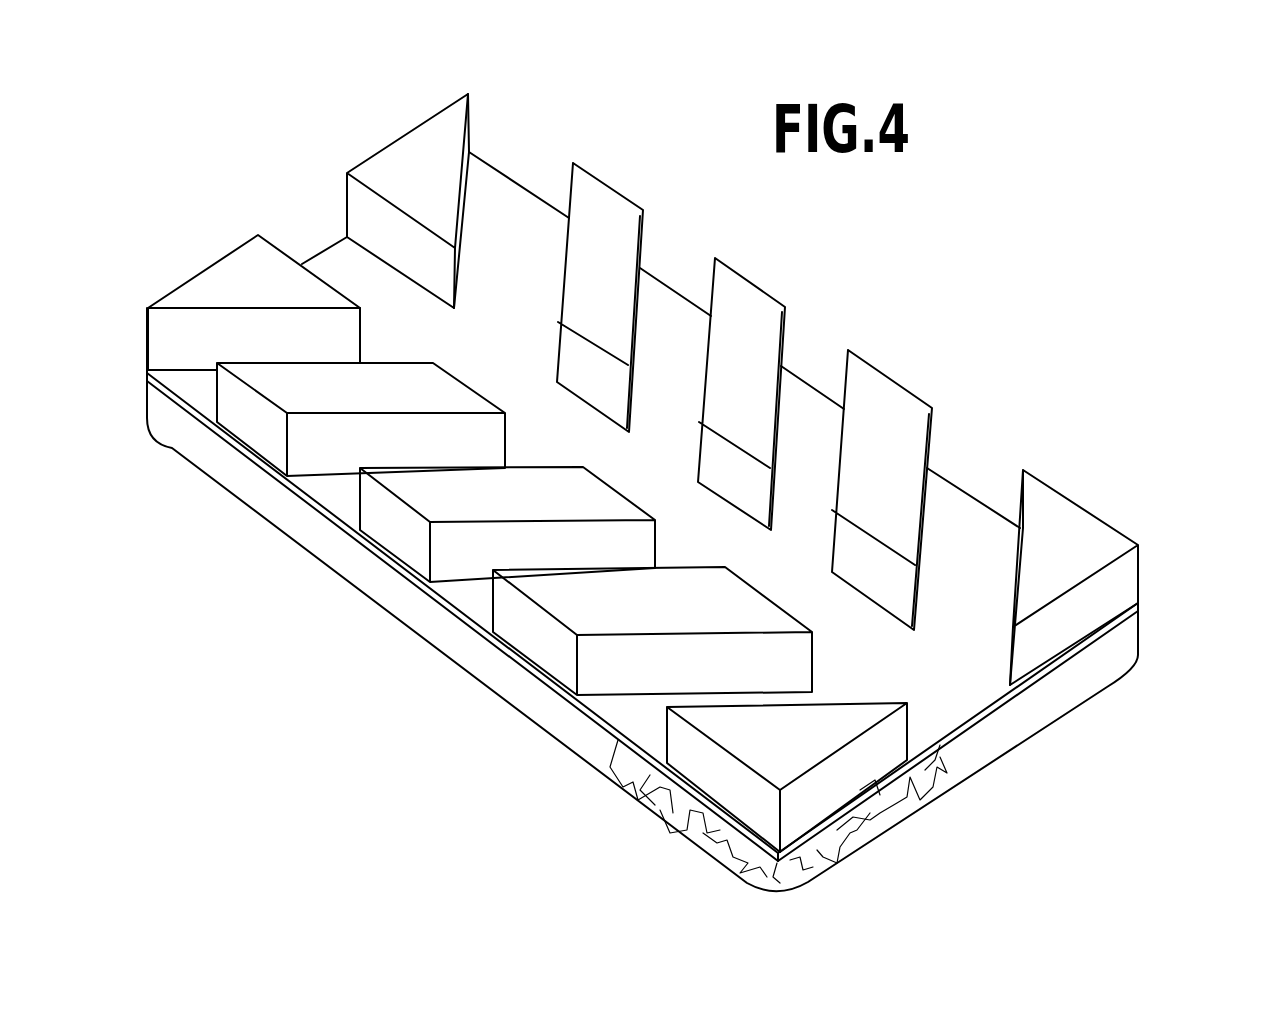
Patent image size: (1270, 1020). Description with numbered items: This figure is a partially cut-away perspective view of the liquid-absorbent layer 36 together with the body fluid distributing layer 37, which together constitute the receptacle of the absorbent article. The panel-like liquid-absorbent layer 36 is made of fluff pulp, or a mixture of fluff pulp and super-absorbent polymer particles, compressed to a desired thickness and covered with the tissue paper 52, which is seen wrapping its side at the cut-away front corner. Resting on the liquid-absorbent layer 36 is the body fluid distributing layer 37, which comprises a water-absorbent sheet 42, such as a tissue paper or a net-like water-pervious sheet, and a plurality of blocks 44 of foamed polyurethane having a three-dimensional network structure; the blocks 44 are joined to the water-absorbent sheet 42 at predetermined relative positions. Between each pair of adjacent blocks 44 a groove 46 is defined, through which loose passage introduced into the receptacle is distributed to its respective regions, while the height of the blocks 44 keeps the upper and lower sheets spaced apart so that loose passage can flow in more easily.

The liquid-absorbent layer 36 is at (1103, 697).
The body fluid distributing layer 37 is at (1102, 513).
The water-absorbent sheet 42 is at (938, 712).
The blocks 44 is at (882, 408).
The groove 46 is at (333, 262).
The tissue paper 52 is at (1045, 705).